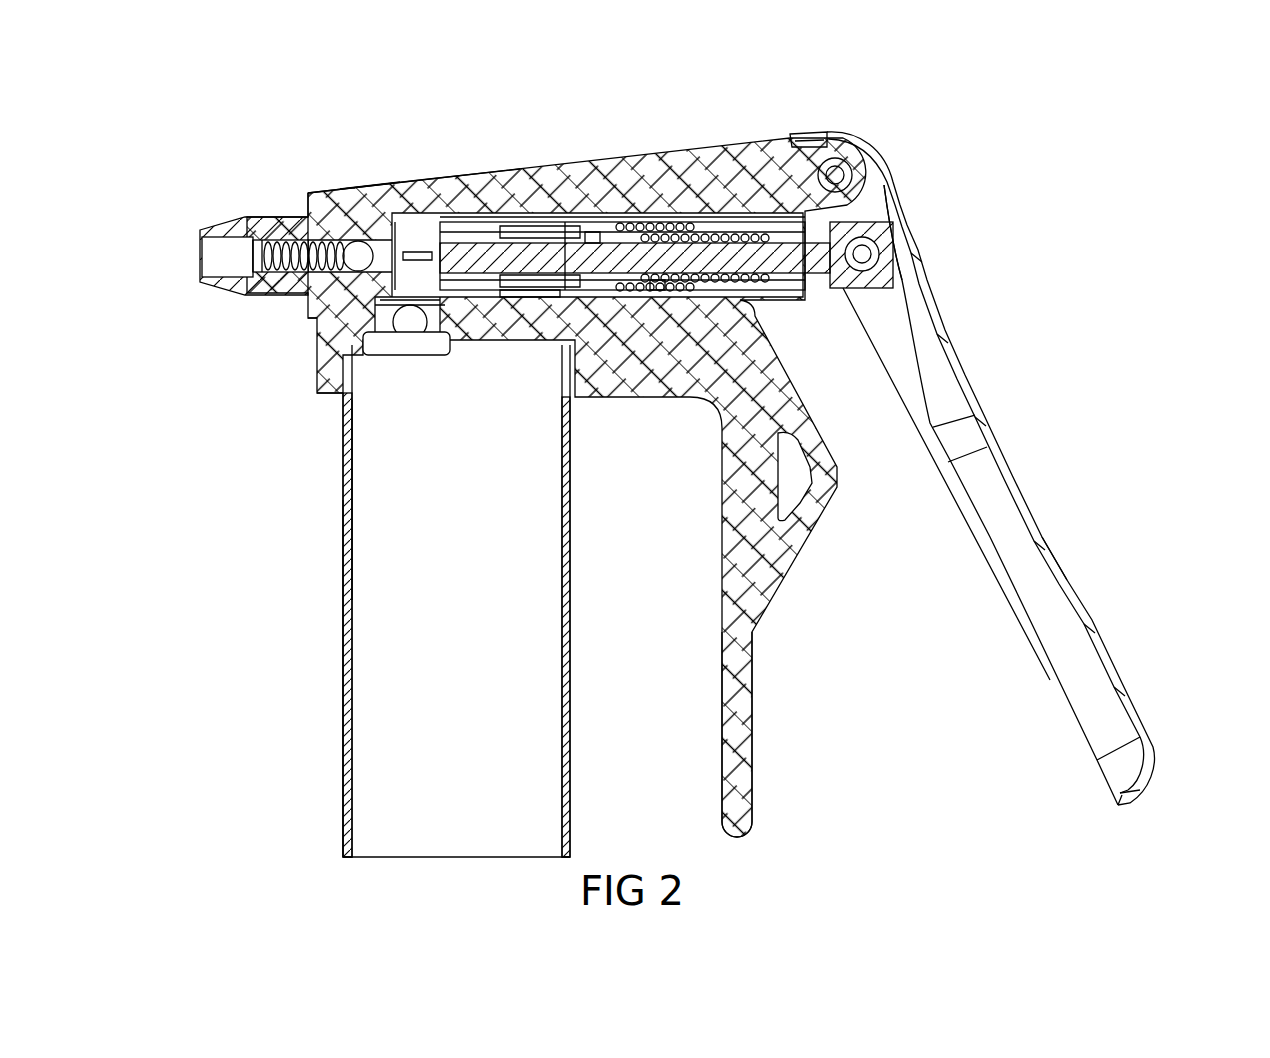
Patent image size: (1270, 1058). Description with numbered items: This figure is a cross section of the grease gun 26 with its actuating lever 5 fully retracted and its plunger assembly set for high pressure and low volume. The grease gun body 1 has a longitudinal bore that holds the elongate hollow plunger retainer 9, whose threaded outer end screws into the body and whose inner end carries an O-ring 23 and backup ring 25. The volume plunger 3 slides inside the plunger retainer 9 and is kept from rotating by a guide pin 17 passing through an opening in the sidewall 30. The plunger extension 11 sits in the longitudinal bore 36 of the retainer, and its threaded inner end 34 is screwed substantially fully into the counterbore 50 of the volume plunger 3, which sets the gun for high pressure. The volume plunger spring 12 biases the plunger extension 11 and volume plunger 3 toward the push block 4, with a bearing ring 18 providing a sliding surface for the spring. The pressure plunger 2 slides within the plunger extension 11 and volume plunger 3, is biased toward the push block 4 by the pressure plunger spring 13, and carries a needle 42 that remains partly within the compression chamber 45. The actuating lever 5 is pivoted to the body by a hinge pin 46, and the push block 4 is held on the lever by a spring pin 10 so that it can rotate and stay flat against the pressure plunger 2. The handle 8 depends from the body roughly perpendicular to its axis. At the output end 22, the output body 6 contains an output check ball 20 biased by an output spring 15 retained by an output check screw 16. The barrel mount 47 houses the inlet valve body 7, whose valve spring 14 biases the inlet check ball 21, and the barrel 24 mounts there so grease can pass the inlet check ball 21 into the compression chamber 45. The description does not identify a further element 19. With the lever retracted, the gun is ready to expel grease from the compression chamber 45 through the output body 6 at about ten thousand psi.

The grease gun body 1 is at (310, 195).
The pressure plunger 2 is at (805, 290).
The volume plunger 3 is at (520, 213).
The push block 4 is at (867, 222).
The actuating lever 5 is at (1122, 660).
The output body 6 is at (245, 220).
The inlet valve body 7 is at (405, 335).
The handle 8 is at (752, 712).
The plunger retainer 9 is at (543, 213).
The spring pin 10 is at (878, 262).
The plunger extension 11 is at (795, 147).
The volume plunger spring 12 is at (657, 285).
The pressure plunger spring 13 is at (660, 210).
The valve spring 14 is at (442, 572).
The output spring 15 is at (272, 278).
The output check screw 16 is at (252, 277).
The guide pin 17 is at (557, 213).
The bearing ring 18 is at (725, 205).
The inlet passage 19 is at (332, 398).
The output check ball 20 is at (319, 342).
The inlet check ball 21 is at (395, 405).
The output end 22 is at (303, 220).
The O-ring 23 is at (440, 178).
The barrel 24 is at (343, 631).
The backup ring 25 is at (468, 210).
The grease gun 26 is at (1102, 340).
The sidewall 30 is at (610, 213).
The inner end of plunger extension 34 is at (537, 300).
The longitudinal bore of plunger retainer 36 is at (588, 237).
The needle 42 is at (410, 250).
The compression chamber 45 is at (372, 183).
The hinge pin 46 is at (857, 147).
The barrel mount 47 is at (580, 300).
The counterbore 50 is at (520, 298).